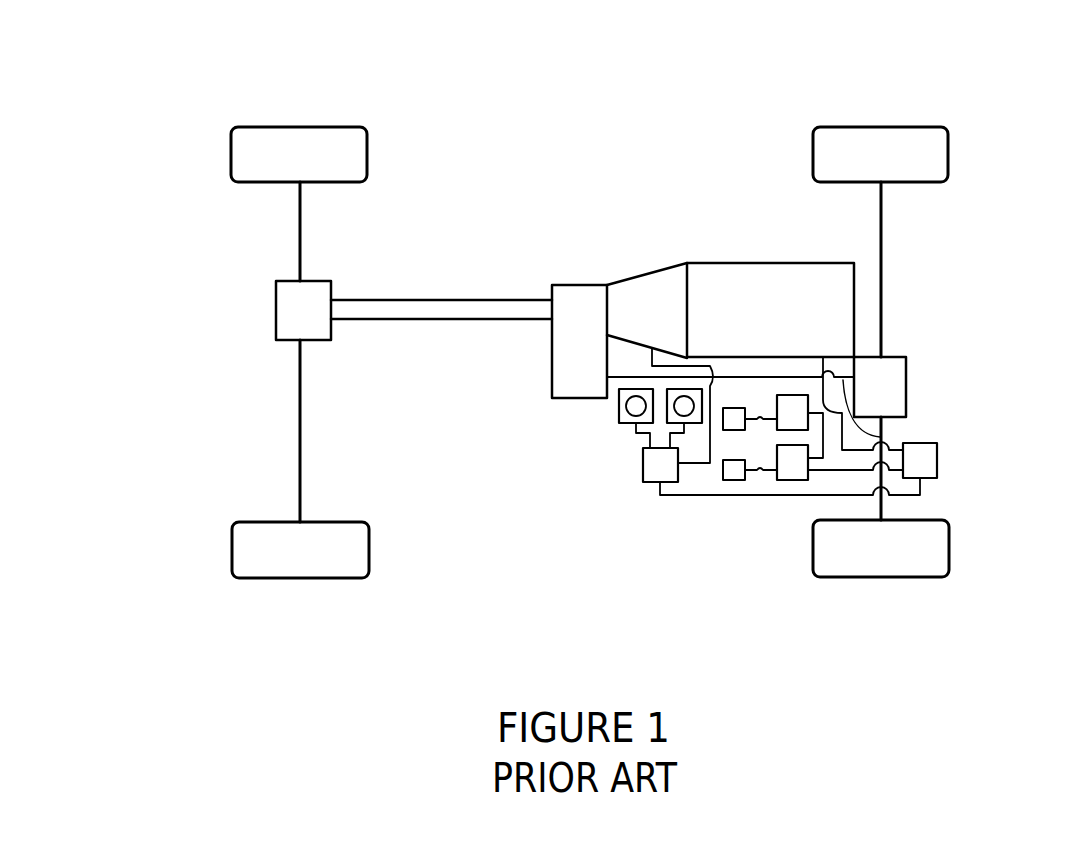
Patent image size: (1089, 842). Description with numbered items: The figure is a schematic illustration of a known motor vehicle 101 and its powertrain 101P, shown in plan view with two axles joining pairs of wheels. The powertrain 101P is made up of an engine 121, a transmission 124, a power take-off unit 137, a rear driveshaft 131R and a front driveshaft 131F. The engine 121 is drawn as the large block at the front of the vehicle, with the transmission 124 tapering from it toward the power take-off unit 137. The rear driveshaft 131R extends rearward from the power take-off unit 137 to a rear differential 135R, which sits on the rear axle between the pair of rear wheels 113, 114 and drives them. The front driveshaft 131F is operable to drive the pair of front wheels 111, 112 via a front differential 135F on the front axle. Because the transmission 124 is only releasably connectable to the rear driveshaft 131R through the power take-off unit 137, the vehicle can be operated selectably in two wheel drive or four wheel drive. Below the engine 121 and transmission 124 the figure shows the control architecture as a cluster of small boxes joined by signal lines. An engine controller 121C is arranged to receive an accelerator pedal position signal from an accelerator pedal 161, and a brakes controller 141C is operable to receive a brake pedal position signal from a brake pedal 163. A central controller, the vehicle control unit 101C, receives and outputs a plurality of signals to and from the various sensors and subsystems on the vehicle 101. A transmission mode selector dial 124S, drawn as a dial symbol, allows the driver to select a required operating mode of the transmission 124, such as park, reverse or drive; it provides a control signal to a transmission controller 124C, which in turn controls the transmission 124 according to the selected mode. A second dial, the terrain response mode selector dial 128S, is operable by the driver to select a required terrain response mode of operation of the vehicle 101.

The motor vehicle 101 is at (847, 89).
The powertrain 101P is at (762, 158).
The vehicle control unit 101C is at (921, 460).
The front wheel 111 is at (928, 127).
The front wheel 112 is at (932, 580).
The rear wheel 113 is at (258, 127).
The rear wheel 114 is at (260, 578).
The engine 121 is at (777, 277).
The engine controller 121C is at (793, 462).
The transmission 124 is at (670, 285).
The transmission controller 124C is at (655, 477).
The transmission mode selector dial 124S is at (617, 410).
The terrain response mode selector dial 128S is at (683, 392).
The front driveshaft 131F is at (880, 437).
The rear driveshaft 131R is at (433, 310).
The front differential 135F is at (893, 387).
The rear differential 135R is at (300, 318).
The power take-off unit 137 is at (575, 303).
The brakes controller 141C is at (793, 403).
The accelerator pedal 161 is at (735, 470).
The brake pedal 163 is at (735, 420).